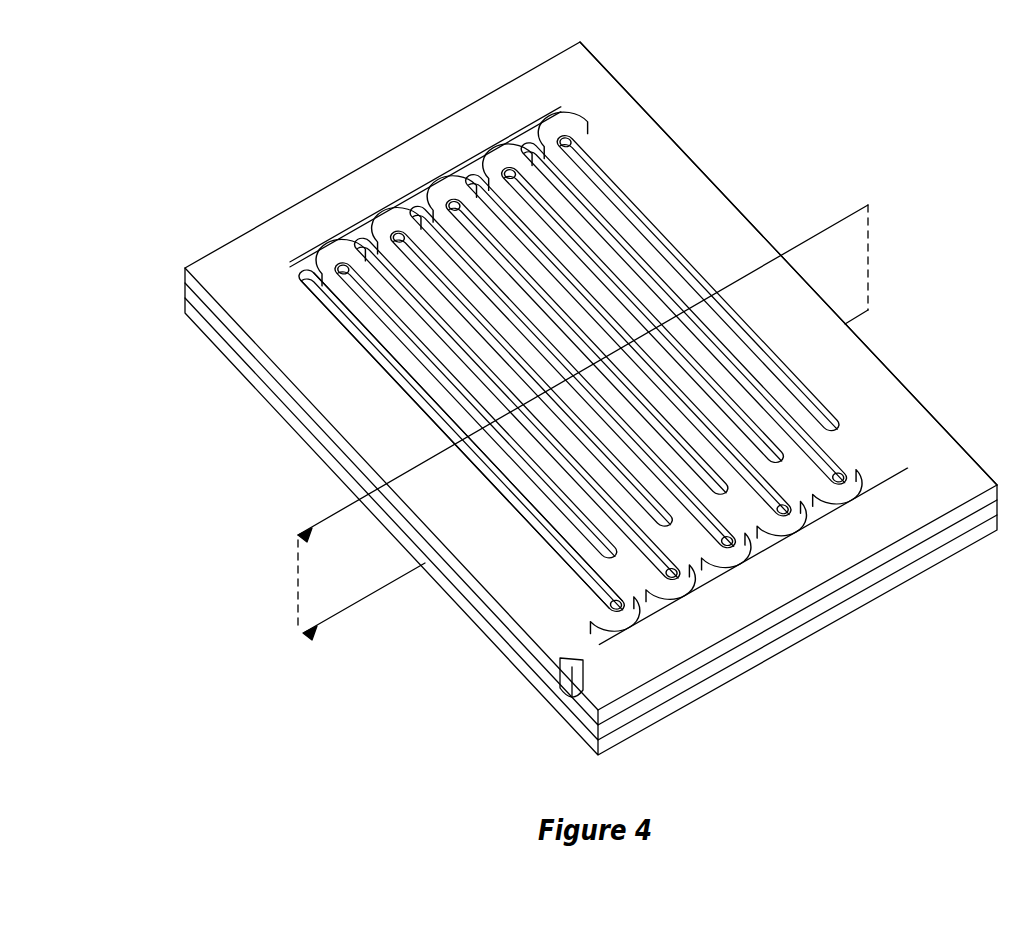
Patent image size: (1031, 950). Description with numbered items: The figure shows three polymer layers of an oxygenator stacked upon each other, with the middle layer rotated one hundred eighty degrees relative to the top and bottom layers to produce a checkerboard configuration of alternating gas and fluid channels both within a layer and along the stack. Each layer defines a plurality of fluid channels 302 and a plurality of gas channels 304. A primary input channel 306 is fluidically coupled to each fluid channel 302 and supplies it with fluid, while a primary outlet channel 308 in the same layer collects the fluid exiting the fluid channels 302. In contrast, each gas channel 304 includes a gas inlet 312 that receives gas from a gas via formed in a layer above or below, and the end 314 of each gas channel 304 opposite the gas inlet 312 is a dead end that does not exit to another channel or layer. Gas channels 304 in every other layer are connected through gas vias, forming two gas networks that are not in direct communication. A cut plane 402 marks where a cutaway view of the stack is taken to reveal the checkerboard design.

The fluid channels 302 is at (400, 383).
The gas channels 304 is at (698, 287).
The primary input channel 306 is at (706, 590).
The primary outlet channel 308 is at (472, 162).
The gas inlet 312 is at (588, 166).
The dead end 314 is at (582, 660).
The cut plane 402 is at (870, 243).